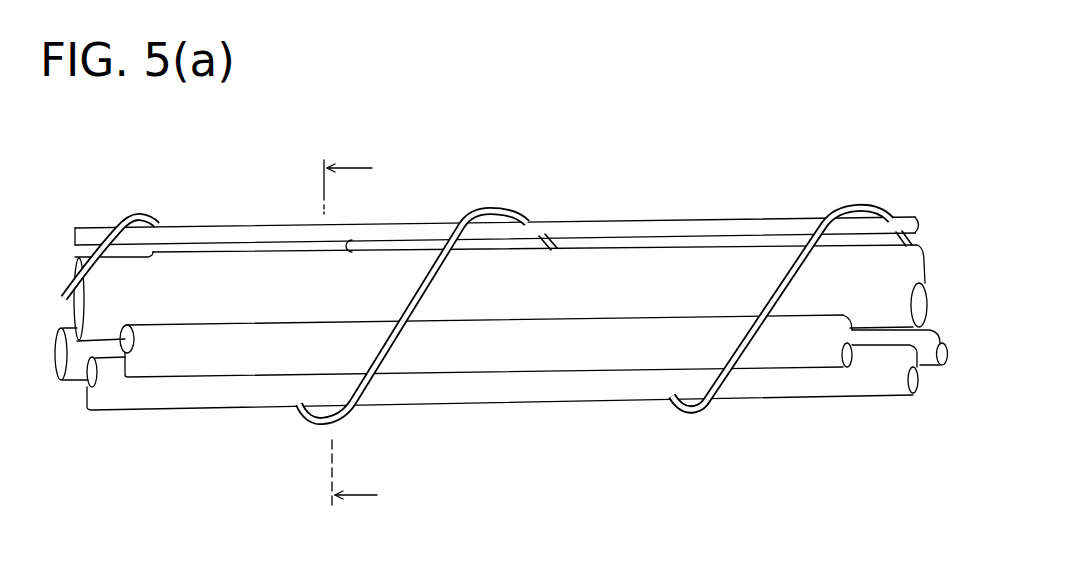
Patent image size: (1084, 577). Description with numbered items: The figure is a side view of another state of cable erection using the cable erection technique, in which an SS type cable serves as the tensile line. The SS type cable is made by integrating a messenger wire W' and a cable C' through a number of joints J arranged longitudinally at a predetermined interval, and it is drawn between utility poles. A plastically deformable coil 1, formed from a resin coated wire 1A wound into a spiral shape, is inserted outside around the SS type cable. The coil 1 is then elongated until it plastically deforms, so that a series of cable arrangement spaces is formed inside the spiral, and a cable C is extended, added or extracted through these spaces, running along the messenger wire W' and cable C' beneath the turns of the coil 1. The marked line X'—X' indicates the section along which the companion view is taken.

The plastically deformable coil 1 is at (500, 208).
The resin coated wire 1A is at (697, 411).
The joint J is at (238, 250).
The messenger wire W' is at (497, 183).
The cable C' is at (500, 228).
The cable C is at (501, 418).
The line X'— X' is at (367, 331).